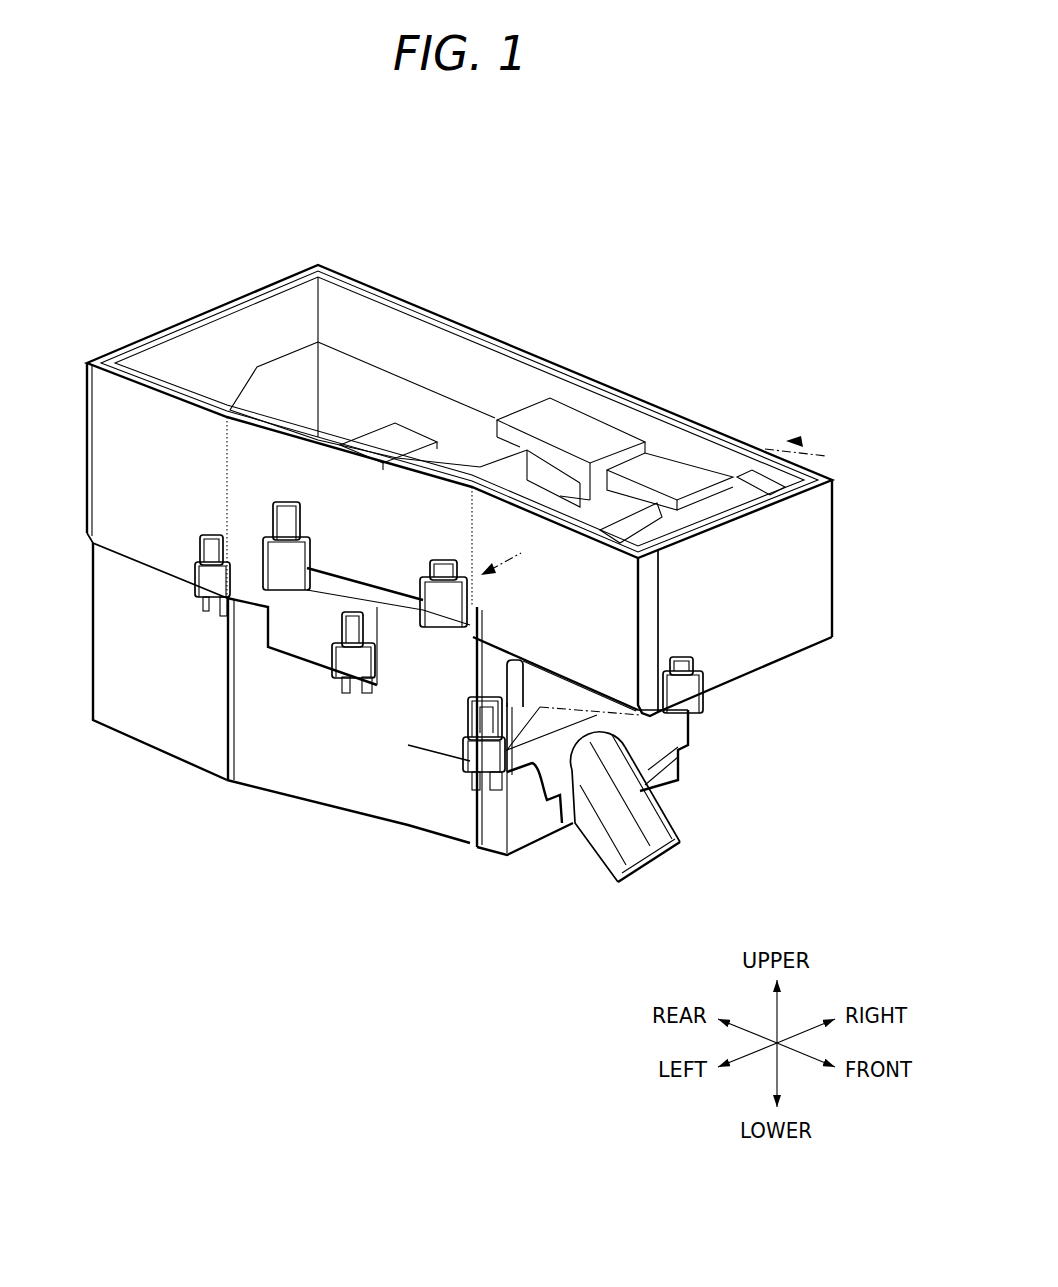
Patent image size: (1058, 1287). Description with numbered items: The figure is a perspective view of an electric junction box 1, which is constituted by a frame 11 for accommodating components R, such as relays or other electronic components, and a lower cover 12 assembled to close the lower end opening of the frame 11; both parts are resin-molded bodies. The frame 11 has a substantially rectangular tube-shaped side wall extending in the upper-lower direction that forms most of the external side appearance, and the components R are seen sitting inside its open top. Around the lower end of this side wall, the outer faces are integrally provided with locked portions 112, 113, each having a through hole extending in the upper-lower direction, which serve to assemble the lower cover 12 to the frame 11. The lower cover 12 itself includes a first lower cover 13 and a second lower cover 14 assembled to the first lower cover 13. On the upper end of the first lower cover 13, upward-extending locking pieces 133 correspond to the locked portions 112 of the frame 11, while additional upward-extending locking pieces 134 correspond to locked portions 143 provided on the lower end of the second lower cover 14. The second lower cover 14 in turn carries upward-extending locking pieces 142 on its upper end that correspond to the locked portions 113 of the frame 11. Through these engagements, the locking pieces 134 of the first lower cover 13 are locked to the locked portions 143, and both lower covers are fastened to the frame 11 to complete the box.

The electric junction box 1 is at (603, 276).
The frame 11 is at (812, 568).
The lower cover 12 is at (468, 916).
The first lower cover 13 is at (366, 794).
The second lower cover 14 is at (441, 742).
The locked portion 112 is at (222, 582).
The locked portion 113 is at (695, 690).
The locking piece 133 is at (222, 530).
The locking piece 134 is at (360, 632).
The locking piece 142 is at (690, 657).
The locked portion 143 is at (349, 668).
The component R is at (460, 452).